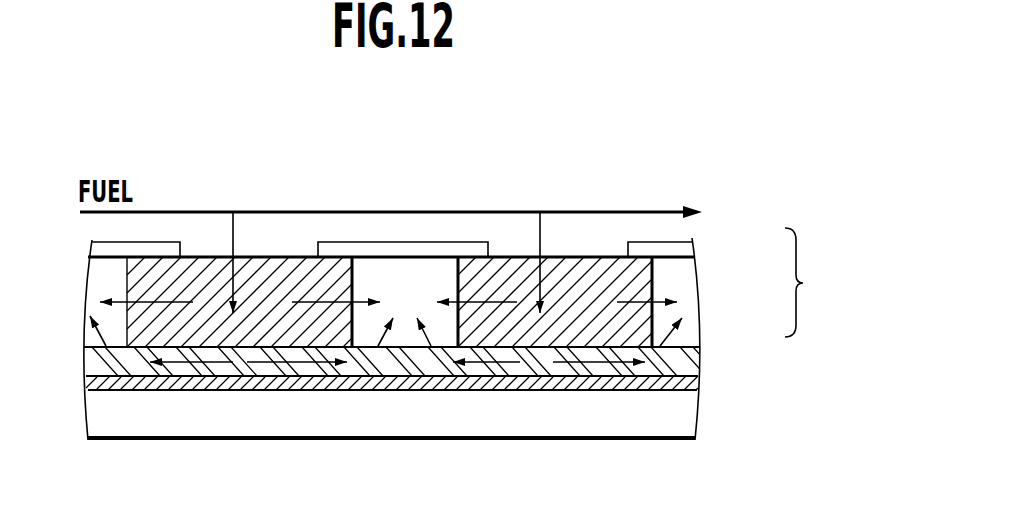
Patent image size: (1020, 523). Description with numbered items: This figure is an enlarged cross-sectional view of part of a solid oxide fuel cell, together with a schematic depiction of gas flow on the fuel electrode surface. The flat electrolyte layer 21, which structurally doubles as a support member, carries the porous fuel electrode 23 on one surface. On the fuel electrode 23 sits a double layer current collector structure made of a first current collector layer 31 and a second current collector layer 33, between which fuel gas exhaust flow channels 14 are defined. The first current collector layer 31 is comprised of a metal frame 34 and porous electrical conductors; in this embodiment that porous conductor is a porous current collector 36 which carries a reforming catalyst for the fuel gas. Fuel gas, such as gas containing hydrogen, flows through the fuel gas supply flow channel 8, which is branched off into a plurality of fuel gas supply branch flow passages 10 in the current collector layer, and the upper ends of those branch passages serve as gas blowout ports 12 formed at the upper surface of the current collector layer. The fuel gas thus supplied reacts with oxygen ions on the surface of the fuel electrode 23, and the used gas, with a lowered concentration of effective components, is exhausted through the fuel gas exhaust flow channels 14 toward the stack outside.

The fuel gas supply flow channel 8 is at (352, 210).
The fuel gas supply branch flow passages 10 is at (240, 247).
The gas blowout ports 12 is at (240, 328).
The fuel gas exhaust flow channels 14 is at (408, 318).
The electrolyte layer 21 is at (668, 420).
The fuel electrode 23 is at (690, 381).
The first current collector layer 31 is at (813, 282).
The second current collector layer 33 is at (417, 370).
The metal frame 34 is at (465, 242).
The porous current collector 36 is at (660, 278).